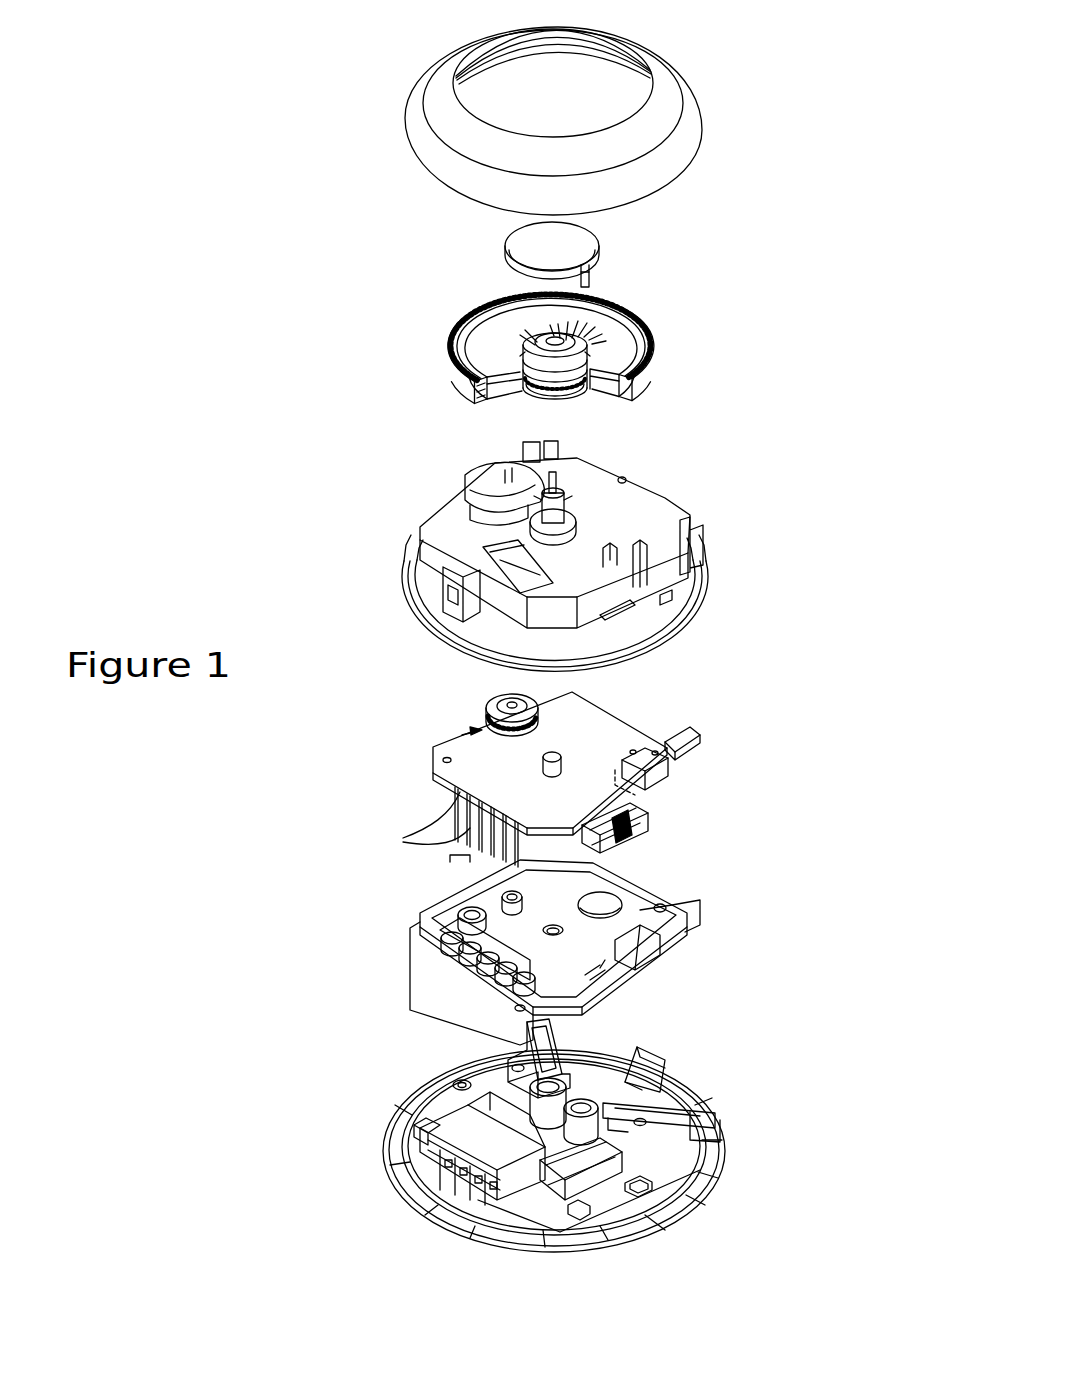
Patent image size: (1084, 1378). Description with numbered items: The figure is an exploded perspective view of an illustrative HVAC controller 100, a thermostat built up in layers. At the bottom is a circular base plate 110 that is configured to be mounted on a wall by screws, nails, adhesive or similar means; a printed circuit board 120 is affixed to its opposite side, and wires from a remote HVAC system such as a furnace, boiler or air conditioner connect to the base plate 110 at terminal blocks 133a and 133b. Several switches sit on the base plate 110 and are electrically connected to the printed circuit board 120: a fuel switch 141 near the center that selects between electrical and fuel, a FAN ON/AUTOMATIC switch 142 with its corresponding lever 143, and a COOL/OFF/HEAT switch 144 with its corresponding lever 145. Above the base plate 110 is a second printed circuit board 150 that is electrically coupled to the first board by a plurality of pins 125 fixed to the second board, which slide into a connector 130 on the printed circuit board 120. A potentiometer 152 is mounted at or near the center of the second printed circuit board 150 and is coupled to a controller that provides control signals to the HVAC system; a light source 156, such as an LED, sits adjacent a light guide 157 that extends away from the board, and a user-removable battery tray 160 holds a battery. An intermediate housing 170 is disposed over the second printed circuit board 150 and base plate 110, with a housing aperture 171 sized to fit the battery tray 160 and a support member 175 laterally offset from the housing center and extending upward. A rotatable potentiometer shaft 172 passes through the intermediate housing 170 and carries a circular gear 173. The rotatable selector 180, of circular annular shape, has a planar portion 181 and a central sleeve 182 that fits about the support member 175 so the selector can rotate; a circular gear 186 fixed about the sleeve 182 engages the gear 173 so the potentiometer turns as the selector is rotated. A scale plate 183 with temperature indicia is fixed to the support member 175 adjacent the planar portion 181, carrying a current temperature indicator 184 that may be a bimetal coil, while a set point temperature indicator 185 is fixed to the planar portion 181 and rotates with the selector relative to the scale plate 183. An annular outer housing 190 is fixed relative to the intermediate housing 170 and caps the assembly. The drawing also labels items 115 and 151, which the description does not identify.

The controller 100 is at (757, 76).
The base plate 110 is at (545, 1159).
The mounting slot 115 is at (414, 1125).
The printed circuit board 120 is at (470, 1223).
The plurality of pins 125 is at (420, 838).
The connector 130 is at (425, 1160).
The terminal block 133a is at (453, 1087).
The terminal block 133b is at (652, 1190).
The fuel switch 141 is at (645, 1070).
The FAN ON/AUTOMATIC switch 142 is at (690, 1172).
The lever 143 is at (718, 1125).
The COOL/OFF/HEAT switch 144 is at (500, 1076).
The lever 145 is at (522, 1030).
The second printed circuit board 150 is at (561, 767).
The hole 151 is at (558, 752).
The potentiometer 152 is at (462, 735).
The light source 156 is at (640, 775).
The light guide 157 is at (690, 742).
The battery tray 160 is at (615, 835).
The intermediate housing 170 is at (546, 556).
The housing aperture 171 is at (672, 595).
The potentiometer shaft 172 is at (512, 705).
The circular gear 173 is at (468, 698).
The support member 175 is at (560, 508).
The rotatable selector 180 is at (559, 360).
The planar portion 181 is at (622, 392).
The sleeve 182 is at (560, 392).
The scale plate 183 is at (642, 350).
The current temperature indicator 184 is at (478, 380).
The set point temperature indicator 185 is at (585, 343).
The circular gear 186 is at (561, 356).
The outer housing 190 is at (412, 128).